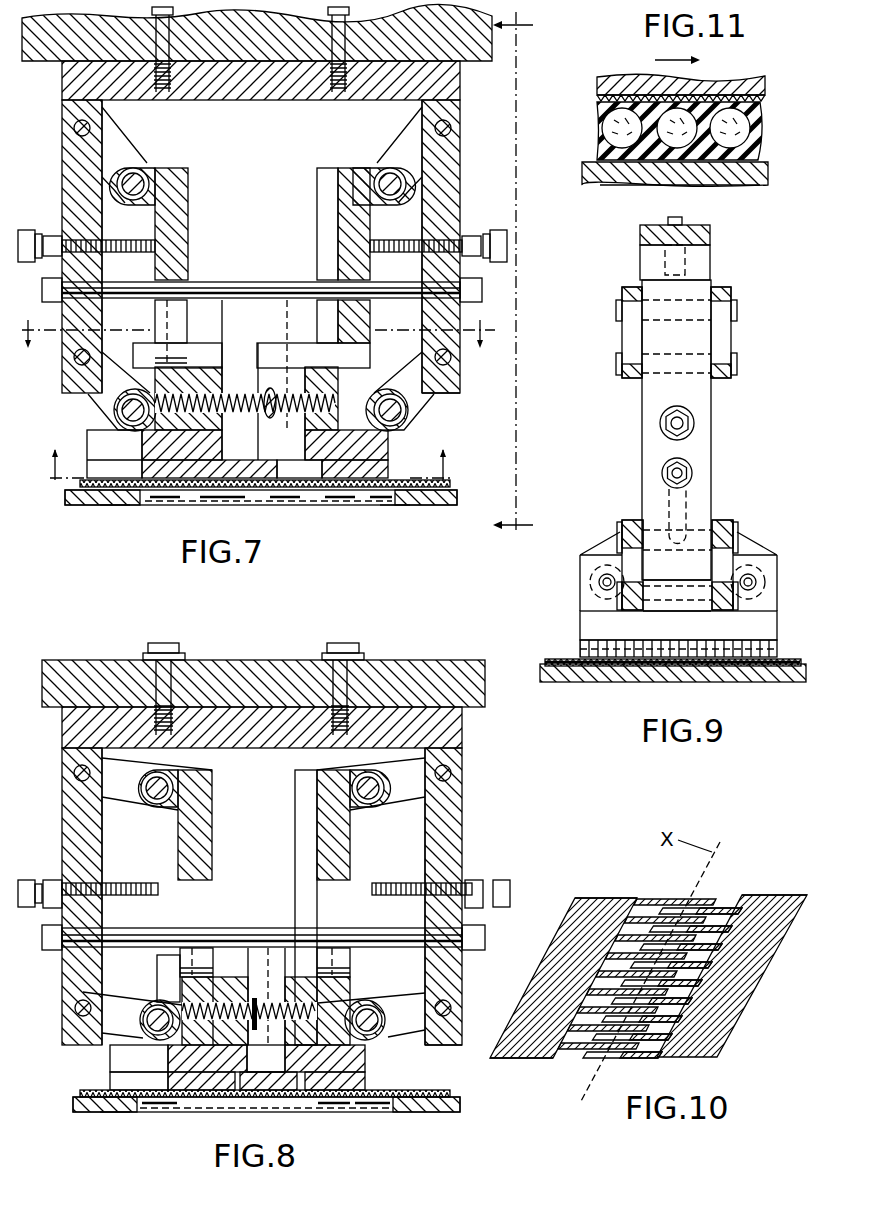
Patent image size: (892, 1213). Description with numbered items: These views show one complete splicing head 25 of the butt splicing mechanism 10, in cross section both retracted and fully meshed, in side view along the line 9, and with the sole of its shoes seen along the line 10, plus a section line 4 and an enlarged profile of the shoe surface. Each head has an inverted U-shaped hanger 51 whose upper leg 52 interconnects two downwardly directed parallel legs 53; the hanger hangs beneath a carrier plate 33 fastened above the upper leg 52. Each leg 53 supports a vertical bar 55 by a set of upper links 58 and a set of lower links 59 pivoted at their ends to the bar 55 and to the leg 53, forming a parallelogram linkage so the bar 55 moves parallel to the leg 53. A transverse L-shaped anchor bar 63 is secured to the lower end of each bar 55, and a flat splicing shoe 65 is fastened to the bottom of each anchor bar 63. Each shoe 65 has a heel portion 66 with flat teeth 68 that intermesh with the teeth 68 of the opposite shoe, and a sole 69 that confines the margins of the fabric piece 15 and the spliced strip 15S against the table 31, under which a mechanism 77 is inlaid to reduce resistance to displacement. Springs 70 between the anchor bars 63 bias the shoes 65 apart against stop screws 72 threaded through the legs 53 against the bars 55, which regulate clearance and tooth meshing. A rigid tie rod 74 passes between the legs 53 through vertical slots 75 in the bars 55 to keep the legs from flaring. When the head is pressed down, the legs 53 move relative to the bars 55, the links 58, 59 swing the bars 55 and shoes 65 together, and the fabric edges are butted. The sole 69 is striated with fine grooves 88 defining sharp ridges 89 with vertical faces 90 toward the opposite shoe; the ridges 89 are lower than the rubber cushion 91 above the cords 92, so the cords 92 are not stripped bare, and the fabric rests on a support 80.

In FIG. 7, the carrier plate 33 is at (64, 53).
In FIG. 8, the carrier plate 33 is at (75, 700).
In FIG. 9, the carrier plate 33 is at (640, 235).
In FIG. 7, the upper leg 52 is at (220, 86).
In FIG. 8, the upper leg 52 is at (222, 745).
In FIG. 9, the upper leg 52 is at (640, 262).
In FIG. 7, the inverted U-shaped hanger 51 is at (371, 101).
In FIG. 8, the inverted U-shaped hanger 51 is at (290, 751).
In FIG. 9, the inverted U-shaped hanger 51 is at (642, 406).
In FIG. 7, the downwardly directed parallel leg 53 is at (452, 206).
In FIG. 8, the downwardly directed parallel leg 53 is at (75, 802).
In FIG. 9, the downwardly directed parallel leg 53 is at (708, 440).
In FIG. 7, the upper links 58 is at (128, 160).
In FIG. 8, the upper links 58 is at (124, 795).
In FIG. 9, the upper links 58 is at (622, 330).
In FIG. 7, the vertical bar 55 is at (350, 212).
In FIG. 8, the vertical bar 55 is at (185, 848).
In FIG. 7, the stop screw 72 is at (152, 255).
In FIG. 8, the stop screw 72 is at (112, 892).
In FIG. 9, the stop screw 72 is at (690, 418).
In FIG. 7, the tie rod 74 is at (280, 290).
In FIG. 8, the tie rod 74 is at (237, 930).
In FIG. 9, the tie rod 74 is at (665, 470).
In FIG. 7, the vertical slot 75 is at (178, 338).
In FIG. 8, the vertical slot 75 is at (208, 905).
In FIG. 9, the vertical slot 75 is at (690, 505).
In FIG. 7, the lower links 59 is at (414, 378).
In FIG. 8, the lower links 59 is at (100, 1002).
In FIG. 9, the lower links 59 is at (735, 540).
In FIG. 7, the spring 70 is at (258, 402).
In FIG. 8, the spring 70 is at (300, 983).
In FIG. 9, the spring 70 is at (755, 570).
In FIG. 7, the anchor bar 63 is at (108, 442).
In FIG. 8, the anchor bar 63 is at (117, 1052).
In FIG. 9, the anchor bar 63 is at (585, 618).
In FIG. 7, the splicing shoe 65 is at (390, 472).
In FIG. 8, the splicing shoe 65 is at (104, 1074).
In FIG. 9, the splicing shoe 65 is at (580, 646).
In FIG. 11, the splicing shoe 65 is at (592, 73).
In FIG. 10, the splicing shoe 65 is at (741, 1022).
In FIG. 7, the heel portion 66 is at (85, 486).
In FIG. 8, the heel portion 66 is at (120, 1083).
In FIG. 10, the heel portion 66 is at (565, 922).
In FIG. 7, the teeth 68 is at (266, 478).
In FIG. 8, the teeth 68 is at (317, 1107).
In FIG. 10, the teeth 68 is at (665, 896).
In FIG. 7, the sole 69 is at (126, 496).
In FIG. 8, the sole 69 is at (187, 1112).
In FIG. 10, the sole 69 is at (560, 972).
In FIG. 7, the mechanism 77 is at (210, 496).
In FIG. 8, the mechanism 77 is at (200, 1112).
In FIG. 7, the table 31 is at (430, 500).
In FIG. 8, the table 31 is at (418, 1113).
In FIG. 7, the piece of bias-cut weftless cord fabric 15 is at (118, 494).
In FIG. 8, the piece of bias-cut weftless cord fabric 15 is at (113, 1115).
In FIG. 7, the spliced strip of fabric 15S is at (398, 498).
In FIG. 7, the splicing head 25 is at (455, 392).
In FIG. 8, the splicing head 25 is at (465, 757).
In FIG. 11, the grooves 88 is at (645, 80).
In FIG. 10, the grooves 88 is at (630, 895).
In FIG. 11, the ridges 89 is at (715, 185).
In FIG. 11, the vertical faces 90 is at (740, 95).
In FIG. 11, the rubber cushion 91 is at (600, 108).
In FIG. 11, the cords 92 is at (640, 130).
In FIG. 9, the support 80 is at (673, 670).
In FIG. 11, the support 80 is at (690, 185).
In FIG. 7, the section line 4- 4 is at (258, 347).
In FIG. 7, the section line 9- 9 is at (519, 275).
In FIG. 7, the butt splicing mechanism 10 is at (251, 450).